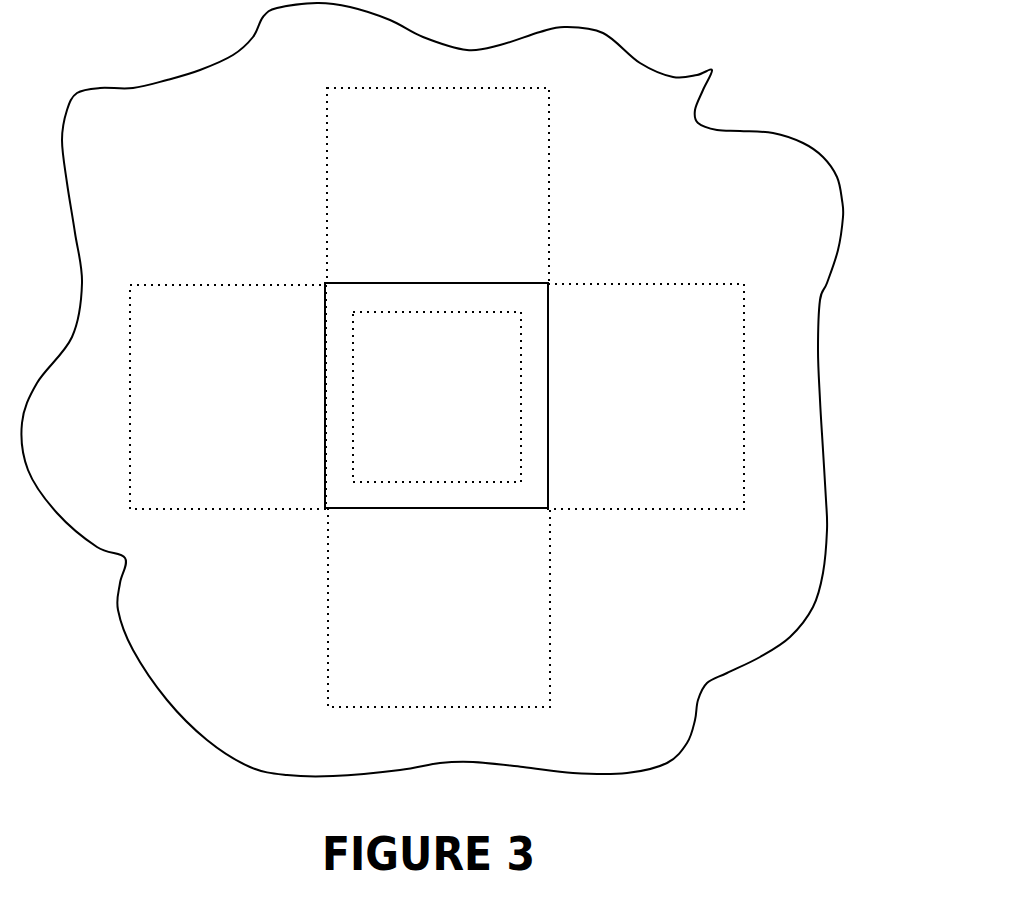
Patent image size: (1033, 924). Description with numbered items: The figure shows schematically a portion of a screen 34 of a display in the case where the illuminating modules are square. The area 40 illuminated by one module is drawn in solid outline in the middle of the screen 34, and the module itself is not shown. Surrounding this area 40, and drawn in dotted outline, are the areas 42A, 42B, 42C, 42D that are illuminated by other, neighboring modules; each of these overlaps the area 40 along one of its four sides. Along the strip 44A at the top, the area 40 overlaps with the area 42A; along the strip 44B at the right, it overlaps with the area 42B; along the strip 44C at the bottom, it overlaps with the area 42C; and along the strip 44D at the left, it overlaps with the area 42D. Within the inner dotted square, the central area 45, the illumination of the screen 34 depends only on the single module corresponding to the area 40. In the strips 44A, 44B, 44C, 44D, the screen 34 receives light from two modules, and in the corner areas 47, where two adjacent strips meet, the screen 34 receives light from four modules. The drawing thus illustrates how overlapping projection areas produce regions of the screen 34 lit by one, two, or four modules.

The screen 34 is at (587, 78).
The area 40 is at (350, 283).
The area 42A is at (347, 87).
The area 42B is at (664, 284).
The area 42C is at (550, 631).
The area 42D is at (247, 513).
The strip 44A is at (428, 297).
The strip 44B is at (533, 372).
The strip 44C is at (453, 500).
The strip 44D is at (340, 420).
The central area 45 is at (483, 347).
The corner areas 47 is at (343, 298).